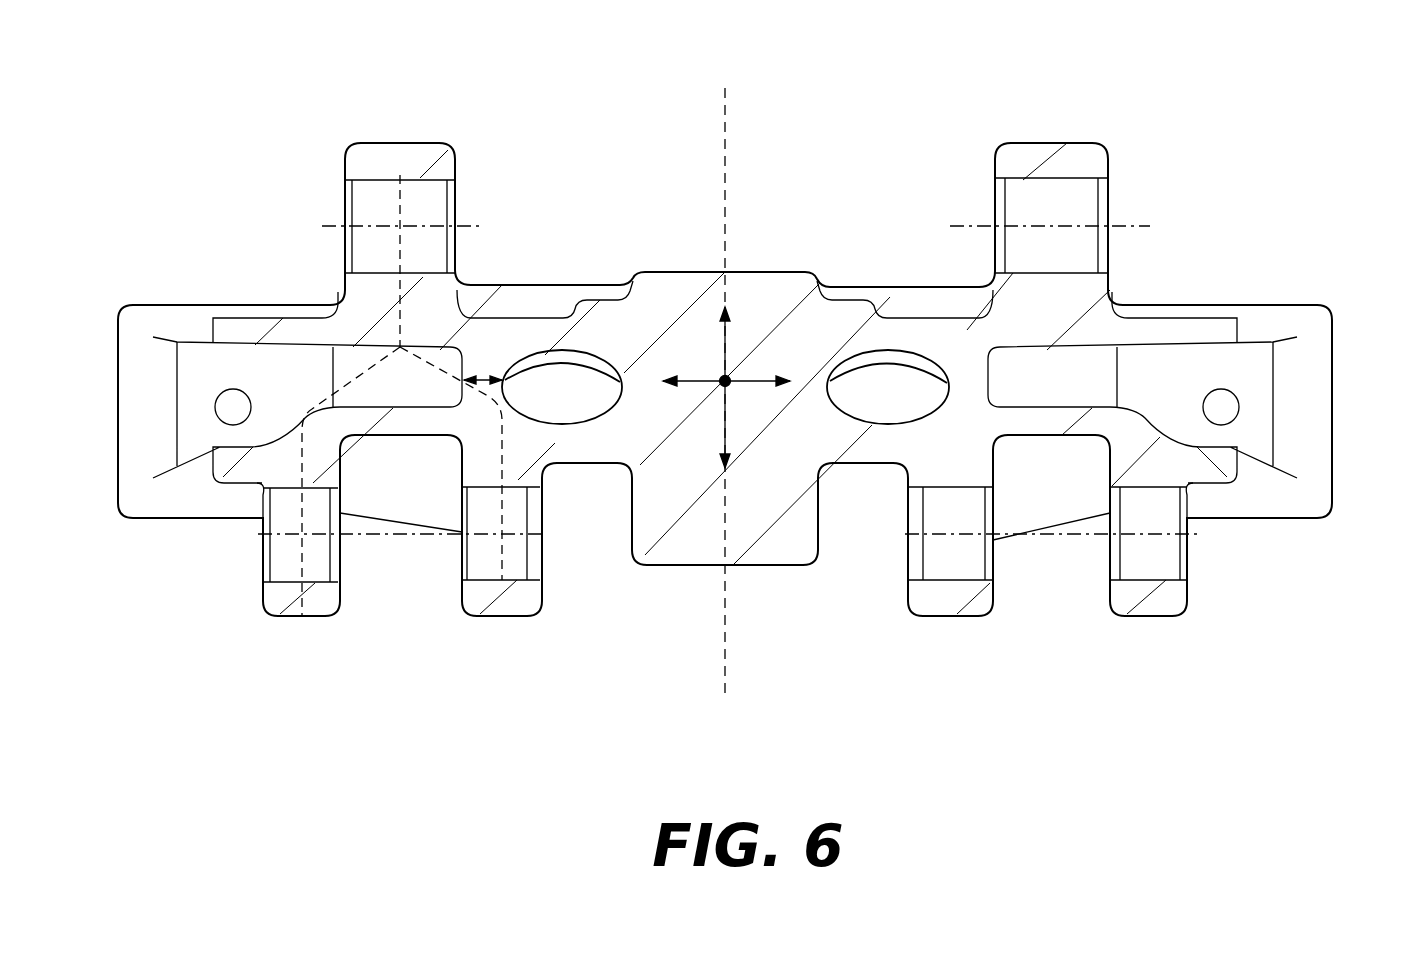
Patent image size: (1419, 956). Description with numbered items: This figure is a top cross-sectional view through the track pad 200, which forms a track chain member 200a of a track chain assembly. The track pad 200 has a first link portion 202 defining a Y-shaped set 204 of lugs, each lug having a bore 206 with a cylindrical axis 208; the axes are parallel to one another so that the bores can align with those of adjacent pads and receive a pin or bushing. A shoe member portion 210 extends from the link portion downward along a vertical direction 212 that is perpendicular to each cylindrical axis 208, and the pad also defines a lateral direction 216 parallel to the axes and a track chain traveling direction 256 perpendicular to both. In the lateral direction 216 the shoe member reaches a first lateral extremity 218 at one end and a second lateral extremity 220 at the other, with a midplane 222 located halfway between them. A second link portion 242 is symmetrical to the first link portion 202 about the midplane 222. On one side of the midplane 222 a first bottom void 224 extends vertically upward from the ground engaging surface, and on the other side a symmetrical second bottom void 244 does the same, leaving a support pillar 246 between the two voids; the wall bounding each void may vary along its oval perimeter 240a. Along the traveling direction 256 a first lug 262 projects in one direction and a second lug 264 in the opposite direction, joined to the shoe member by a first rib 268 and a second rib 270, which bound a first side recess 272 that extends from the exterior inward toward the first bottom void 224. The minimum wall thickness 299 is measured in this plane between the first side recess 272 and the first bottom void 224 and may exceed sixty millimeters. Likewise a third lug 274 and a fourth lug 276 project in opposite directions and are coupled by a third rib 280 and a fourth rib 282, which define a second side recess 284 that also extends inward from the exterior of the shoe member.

The track pad 200 is at (512, 116).
The track chain member 200a is at (907, 90).
The first link portion 202 is at (356, 487).
The Y-shaped set of lugs 204 is at (395, 207).
The bore 206 is at (440, 255).
The cylindrical axis 208 is at (370, 223).
The shoe member portion 210 is at (1273, 531).
The vertical direction 212 is at (727, 383).
The lateral direction 216 is at (760, 343).
The first lateral extremity 218 is at (116, 487).
The second lateral extremity 220 is at (1332, 330).
The midplane 222 is at (727, 690).
The first bottom void 224 is at (572, 410).
The oval perimeter 240a is at (565, 426).
The second link portion 242 is at (991, 247).
The second bottom void 244 is at (911, 406).
The support pillar 246 is at (757, 467).
The track chain traveling direction 256 is at (722, 423).
The first lug 262 is at (313, 614).
The second lug 264 is at (349, 145).
The first rib 268 is at (200, 477).
The second rib 270 is at (200, 327).
The first side recess 272 is at (300, 365).
The third lug 274 is at (1165, 606).
The fourth lug 276 is at (1104, 138).
The third rib 280 is at (1262, 480).
The fourth rib 282 is at (1262, 330).
The second side recess 284 is at (1178, 363).
The minimum wall thickness 299 is at (482, 378).